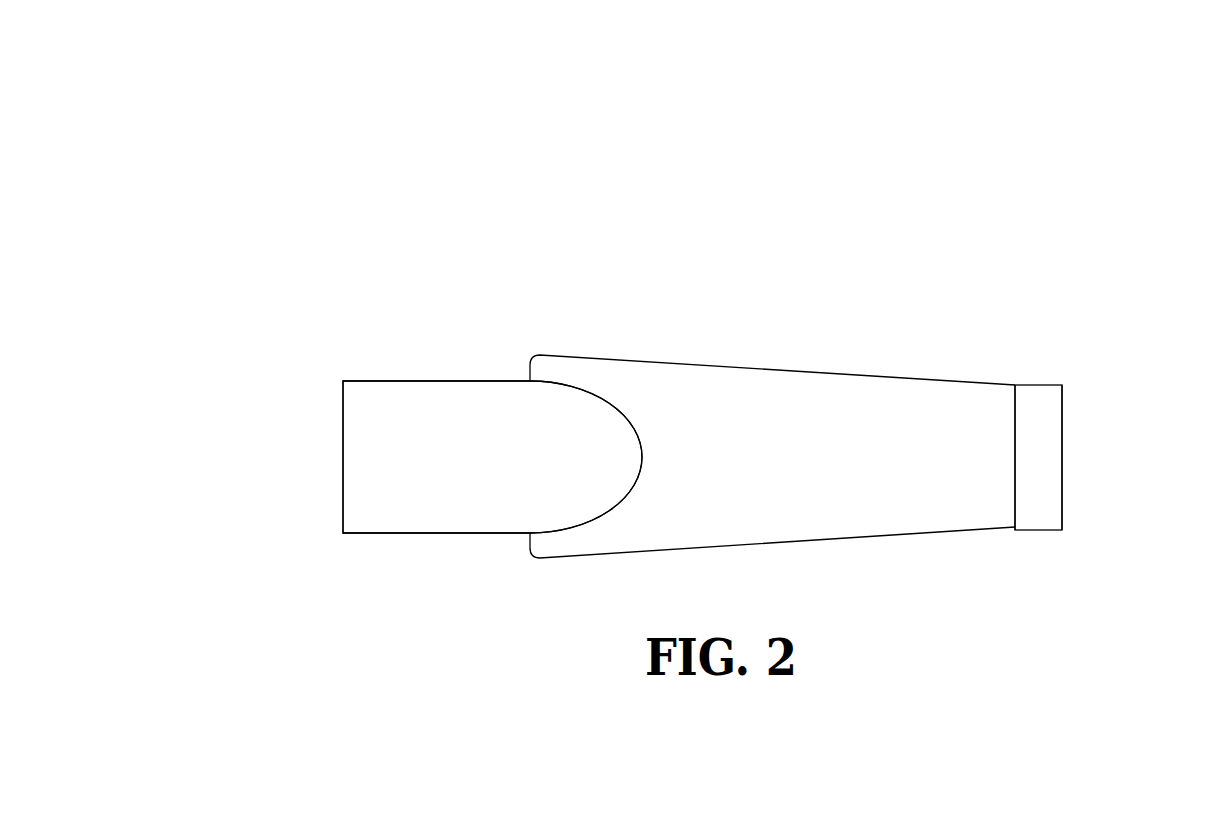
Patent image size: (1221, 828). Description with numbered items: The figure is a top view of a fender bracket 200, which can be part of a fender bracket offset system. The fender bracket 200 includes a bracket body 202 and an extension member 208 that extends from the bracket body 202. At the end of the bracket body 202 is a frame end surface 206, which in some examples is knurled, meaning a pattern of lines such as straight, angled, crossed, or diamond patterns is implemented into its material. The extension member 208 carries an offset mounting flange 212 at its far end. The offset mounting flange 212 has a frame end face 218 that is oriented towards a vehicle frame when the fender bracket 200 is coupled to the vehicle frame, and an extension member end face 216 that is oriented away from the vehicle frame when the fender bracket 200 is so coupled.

The fender bracket 200 is at (357, 130).
The bracket body 202 is at (427, 369).
The frame end surface 206 is at (343, 500).
The extension member 208 is at (793, 385).
The offset mounting flange 212 is at (1043, 382).
The extension member end face 216 is at (1062, 455).
The frame end face 218 is at (1015, 487).